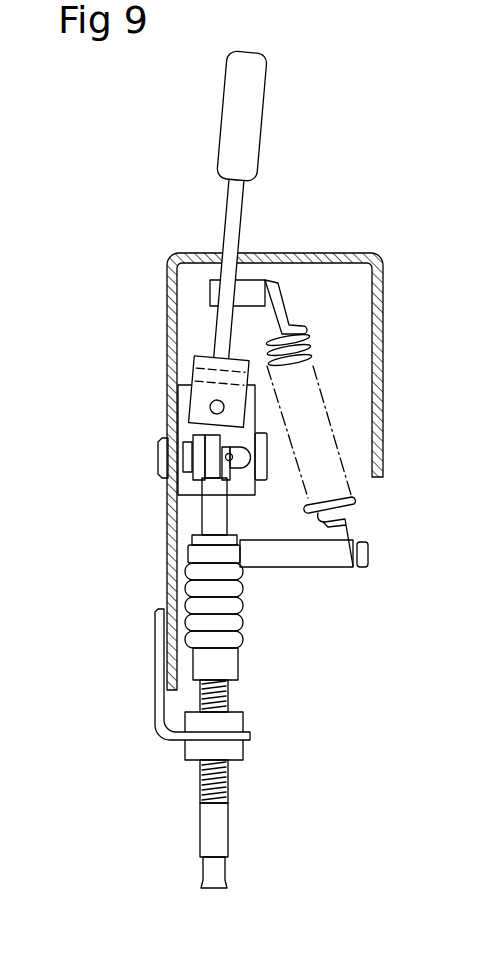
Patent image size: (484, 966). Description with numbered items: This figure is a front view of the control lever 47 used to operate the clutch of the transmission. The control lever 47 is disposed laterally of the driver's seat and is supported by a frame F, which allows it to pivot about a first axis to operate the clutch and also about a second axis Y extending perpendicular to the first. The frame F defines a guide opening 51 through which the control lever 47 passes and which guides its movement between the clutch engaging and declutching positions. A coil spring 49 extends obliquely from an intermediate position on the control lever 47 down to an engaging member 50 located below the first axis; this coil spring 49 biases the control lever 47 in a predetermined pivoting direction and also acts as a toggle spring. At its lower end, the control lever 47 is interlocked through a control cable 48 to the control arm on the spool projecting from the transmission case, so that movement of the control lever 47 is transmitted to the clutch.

The control lever 47 is at (260, 112).
The control cable 48 is at (210, 868).
The coil spring 49 is at (308, 348).
The engaging member 50 is at (325, 567).
The guide opening 51 is at (217, 253).
The frame F is at (168, 300).
The axis Y is at (210, 406).